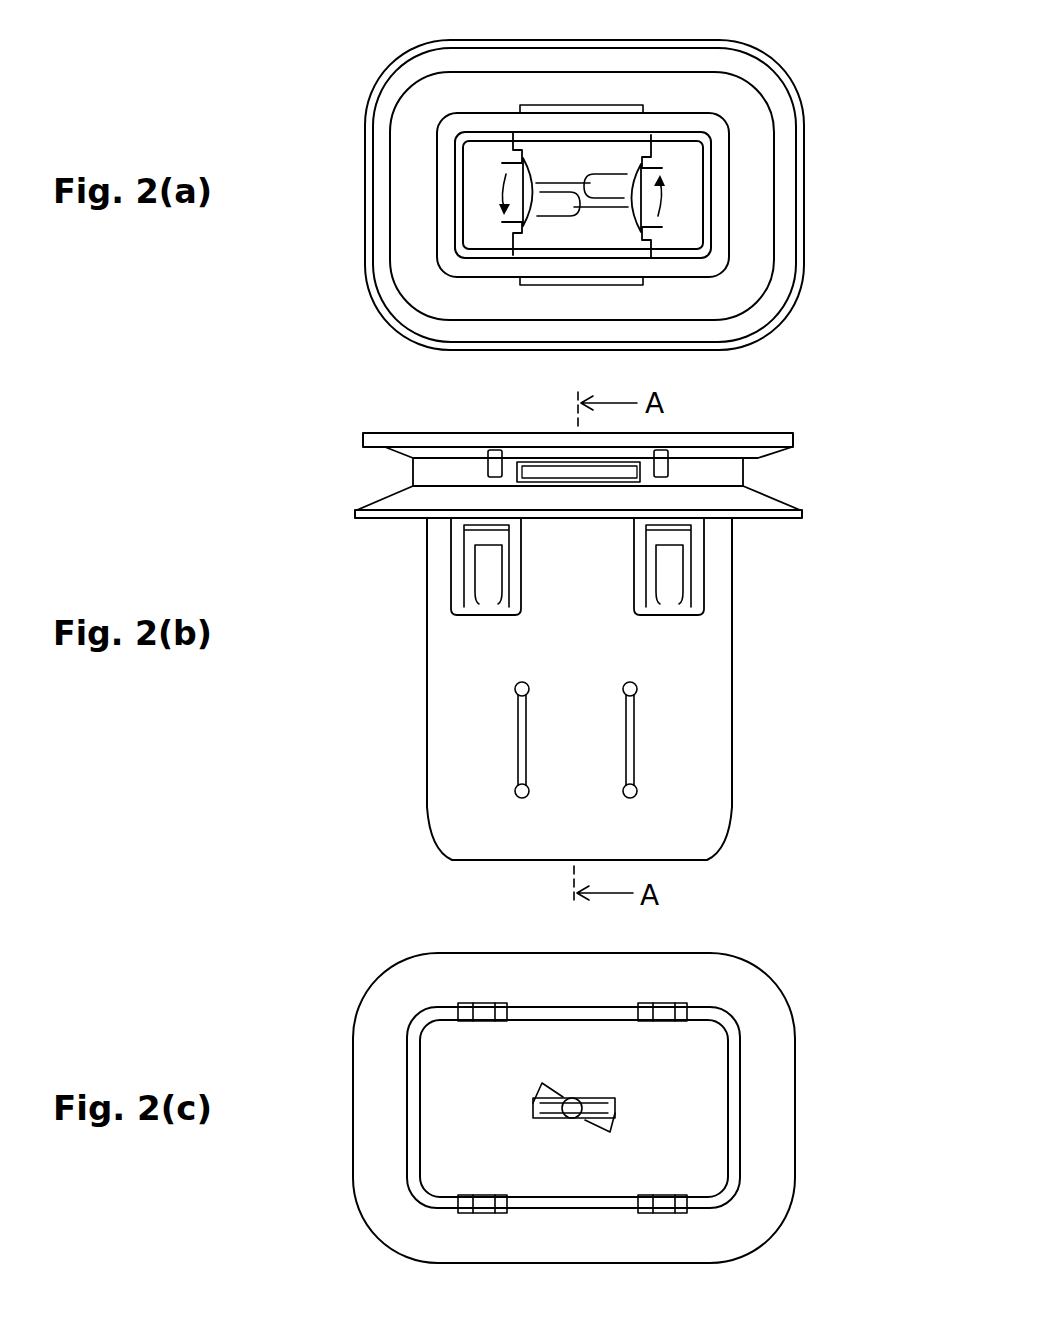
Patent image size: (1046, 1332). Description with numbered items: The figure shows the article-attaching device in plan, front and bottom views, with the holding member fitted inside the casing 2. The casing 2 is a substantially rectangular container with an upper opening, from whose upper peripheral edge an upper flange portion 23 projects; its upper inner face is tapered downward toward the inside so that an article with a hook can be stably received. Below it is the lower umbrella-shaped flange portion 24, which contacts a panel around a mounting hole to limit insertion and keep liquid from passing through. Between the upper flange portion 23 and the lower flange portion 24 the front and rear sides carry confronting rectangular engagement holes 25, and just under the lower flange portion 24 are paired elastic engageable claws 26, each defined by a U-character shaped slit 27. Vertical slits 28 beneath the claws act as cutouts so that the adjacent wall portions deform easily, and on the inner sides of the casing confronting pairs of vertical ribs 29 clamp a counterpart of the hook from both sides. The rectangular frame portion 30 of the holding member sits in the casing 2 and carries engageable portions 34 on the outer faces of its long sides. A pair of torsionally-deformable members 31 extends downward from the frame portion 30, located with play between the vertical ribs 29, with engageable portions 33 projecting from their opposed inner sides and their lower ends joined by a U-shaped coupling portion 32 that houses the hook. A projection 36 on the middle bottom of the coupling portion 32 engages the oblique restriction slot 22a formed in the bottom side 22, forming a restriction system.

In FIG. 2A, the casing 2 is at (362, 96).
In FIG. 2C, the bottom side 22 is at (710, 1140).
In FIG. 2C, the restriction slot 22a is at (600, 1128).
In FIG. 2A, the upper flange portion 23 is at (752, 177).
In FIG. 2B, the upper flange portion 23 is at (783, 445).
In FIG. 2B, the lower umbrella-shaped flange portion 24 is at (787, 510).
In FIG. 2C, the lower umbrella-shaped flange portion 24 is at (758, 1004).
In FIG. 2B, the engagement hole 25 is at (516, 468).
In FIG. 2B, the elastic engageable claw 26 is at (473, 540).
In FIG. 2B, the U-character shaped slit 27 is at (697, 590).
In FIG. 2B, the vertical slit 28 is at (631, 741).
In FIG. 2A, the vertical rib 29 is at (660, 163).
In FIG. 2A, the frame portion 30 is at (722, 127).
In FIG. 2A, the torsionally-deformable member 31 is at (508, 150).
In FIG. 2A, the coupling portion 32 is at (634, 212).
In FIG. 2A, the engageable portion 33 is at (555, 200).
In FIG. 2B, the engageable portion 34 is at (543, 468).
In FIG. 2C, the projection 36 is at (607, 1112).